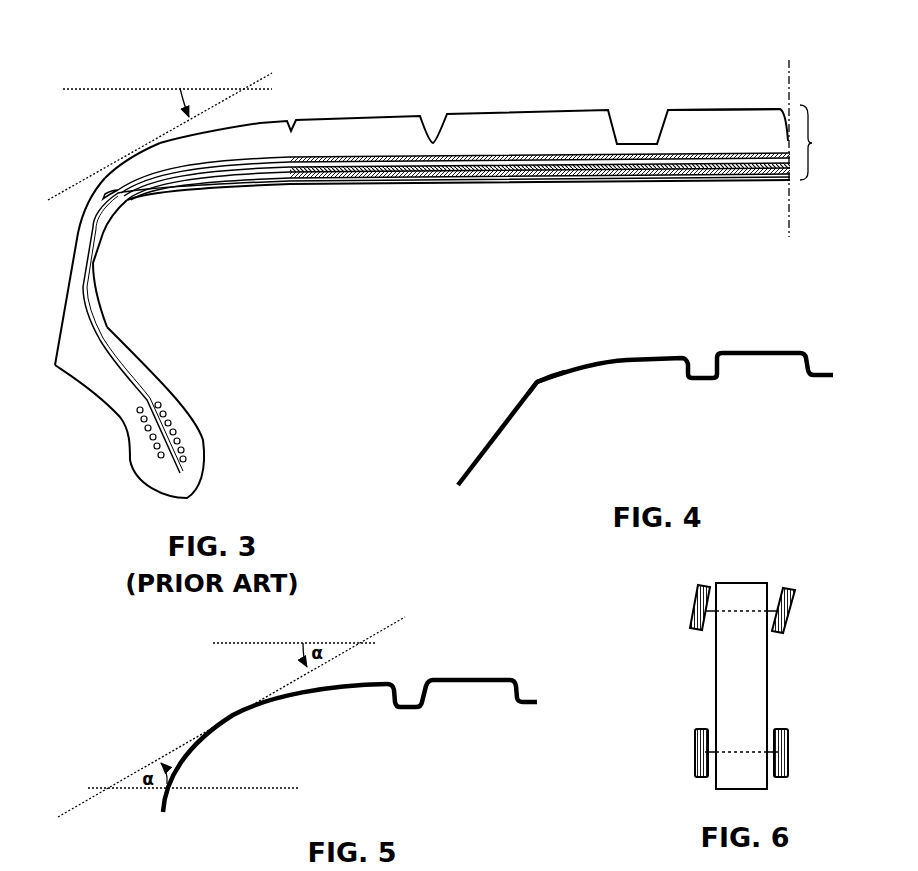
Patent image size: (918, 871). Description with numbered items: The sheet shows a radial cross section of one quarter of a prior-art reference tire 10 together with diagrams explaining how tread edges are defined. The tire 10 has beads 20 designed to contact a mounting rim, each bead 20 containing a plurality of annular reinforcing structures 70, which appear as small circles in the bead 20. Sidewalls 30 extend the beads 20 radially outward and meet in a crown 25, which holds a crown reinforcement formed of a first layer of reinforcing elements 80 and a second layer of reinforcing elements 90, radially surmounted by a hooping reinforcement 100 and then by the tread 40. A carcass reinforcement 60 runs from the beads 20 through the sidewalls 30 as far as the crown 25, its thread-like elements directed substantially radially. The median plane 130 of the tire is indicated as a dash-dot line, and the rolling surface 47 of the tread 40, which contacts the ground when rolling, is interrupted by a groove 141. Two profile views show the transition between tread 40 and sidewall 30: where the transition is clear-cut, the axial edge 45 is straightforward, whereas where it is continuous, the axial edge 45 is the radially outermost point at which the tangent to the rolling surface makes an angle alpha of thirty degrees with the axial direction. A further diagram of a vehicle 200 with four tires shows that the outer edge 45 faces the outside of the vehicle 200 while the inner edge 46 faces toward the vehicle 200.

In FIG. 3, the tire 10 is at (84, 71).
In FIG. 3, the bead 20 is at (137, 463).
In FIG. 3, the crown 25 is at (828, 142).
In FIG. 3, the sidewall 30 is at (70, 295).
In FIG. 4, the sidewall 30 is at (480, 446).
In FIG. 3, the tread 40 is at (596, 143).
In FIG. 4, the tread 40 is at (661, 393).
In FIG. 5, the tread 40 is at (347, 722).
In FIG. 3, the axial edge of the tread 45 is at (138, 147).
In FIG. 4, the axial edge of the tread 45 is at (534, 373).
In FIG. 5, the axial edge of the tread 45 is at (231, 712).
In FIG. 6, the axial edge of the tread 45 is at (685, 631).
In FIG. 6, the inner edge of the tread 46 is at (702, 635).
In FIG. 3, the rolling surface 47 is at (746, 104).
In FIG. 3, the carcass reinforcement 60 is at (86, 248).
In FIG. 3, the annular reinforcing structure 70 is at (165, 422).
In FIG. 3, the first layer of reinforcing elements 80 is at (345, 160).
In FIG. 3, the second layer of reinforcing elements 90 is at (385, 165).
In FIG. 3, the hooping reinforcement 100 is at (465, 160).
In FIG. 3, the median plane 130 is at (792, 230).
In FIG. 3, the groove 141 is at (638, 124).
In FIG. 6, the vehicle 200 is at (741, 686).